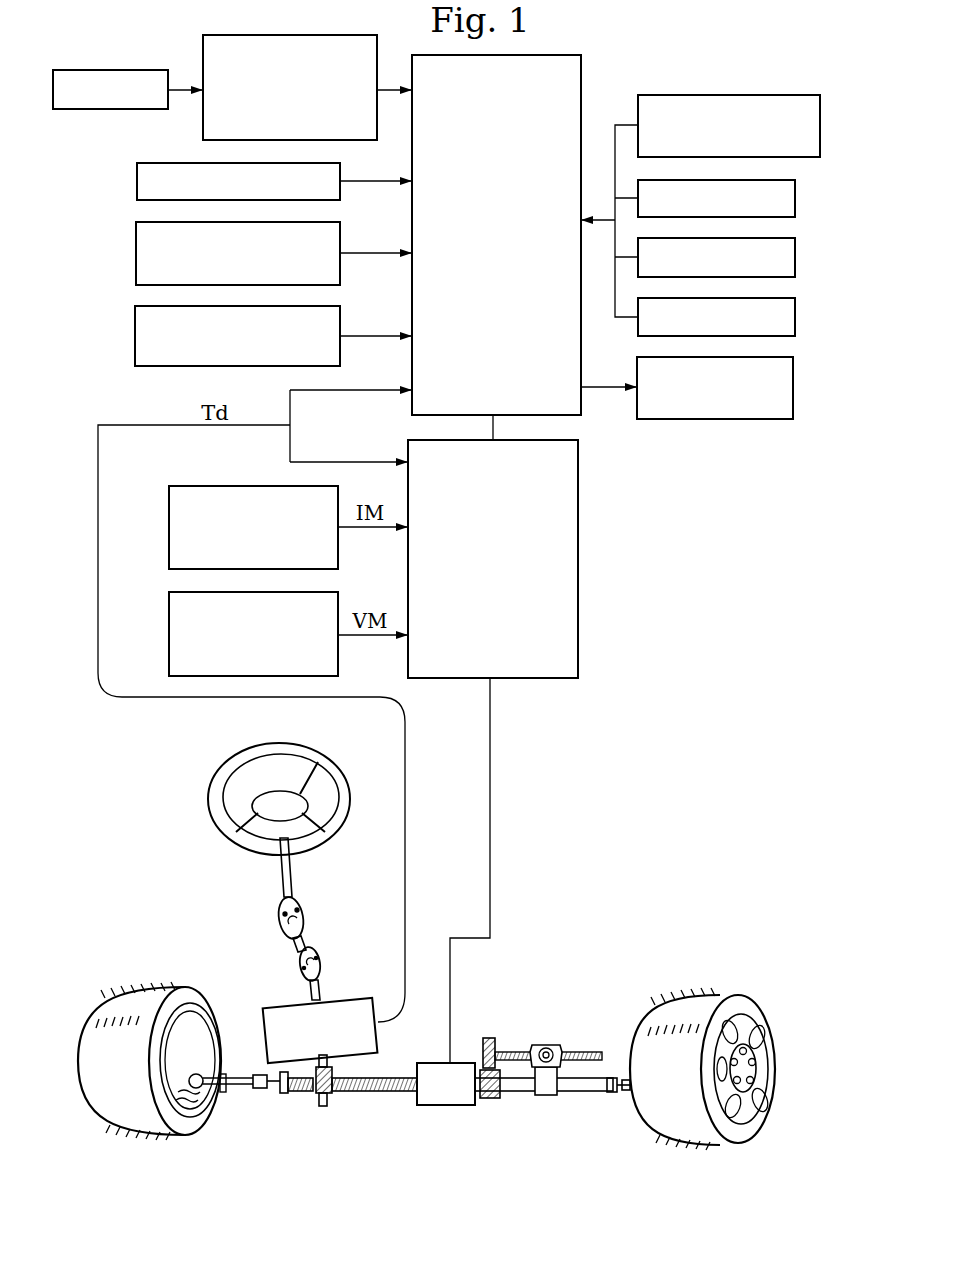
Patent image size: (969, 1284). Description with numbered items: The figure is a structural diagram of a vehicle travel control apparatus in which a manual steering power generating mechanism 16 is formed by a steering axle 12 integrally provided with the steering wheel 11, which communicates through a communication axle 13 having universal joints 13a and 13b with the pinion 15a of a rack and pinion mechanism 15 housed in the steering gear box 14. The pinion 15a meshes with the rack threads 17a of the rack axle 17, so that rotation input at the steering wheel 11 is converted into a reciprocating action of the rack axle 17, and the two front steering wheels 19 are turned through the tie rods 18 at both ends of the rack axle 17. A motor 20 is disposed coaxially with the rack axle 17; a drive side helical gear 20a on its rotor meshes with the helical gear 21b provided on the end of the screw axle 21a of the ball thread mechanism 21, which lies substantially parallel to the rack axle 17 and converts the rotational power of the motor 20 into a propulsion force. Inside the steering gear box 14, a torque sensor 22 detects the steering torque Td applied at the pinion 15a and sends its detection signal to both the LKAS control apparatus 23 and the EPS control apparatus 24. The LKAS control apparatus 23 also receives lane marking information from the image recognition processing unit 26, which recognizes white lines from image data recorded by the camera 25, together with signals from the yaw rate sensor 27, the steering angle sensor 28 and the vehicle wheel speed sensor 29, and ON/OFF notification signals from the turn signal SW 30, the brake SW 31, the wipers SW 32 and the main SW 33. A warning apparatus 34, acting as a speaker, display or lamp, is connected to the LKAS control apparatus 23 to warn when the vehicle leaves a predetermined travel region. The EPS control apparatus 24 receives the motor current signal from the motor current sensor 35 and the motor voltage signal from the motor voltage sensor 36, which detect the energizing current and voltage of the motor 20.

The steering wheel 11 is at (220, 768).
The steering axle 12 is at (292, 870).
The communication axle 13 is at (291, 945).
The universal joint 13a is at (305, 908).
The universal joint 13b is at (318, 960).
The steering gear box 14 is at (256, 1016).
The rack and pinion mechanism 15 is at (300, 1075).
The pinion 15a is at (312, 1094).
The manual steering power generating mechanism 16 is at (250, 937).
The rack axle 17 is at (570, 1095).
The rack threads 17a is at (370, 1093).
The tie rod 18 is at (224, 1092).
The front steering wheel 19 is at (140, 987).
The motor 20 is at (447, 1105).
The drive side helical gear 20a is at (489, 1098).
The ball thread mechanism 21 is at (547, 1048).
The screw axle 21a is at (598, 1051).
The helical gear 21b is at (489, 1037).
The torque sensor 22 is at (377, 1032).
The LKAS control apparatus 23 is at (582, 87).
The EPS control apparatus 24 is at (578, 524).
The camera 25 is at (108, 70).
The image recognition processing unit 26 is at (203, 56).
The yaw rate sensor 27 is at (137, 178).
The steering angle sensor 28 is at (136, 246).
The vehicle wheel speed sensor 29 is at (135, 333).
The turn signal SW 30 is at (740, 95).
The brake SW 31 is at (795, 200).
The wipers SW 32 is at (795, 258).
The main SW 33 is at (795, 318).
The warning apparatus 34 is at (793, 376).
The motor current sensor 35 is at (169, 513).
The motor voltage sensor 36 is at (168, 620).